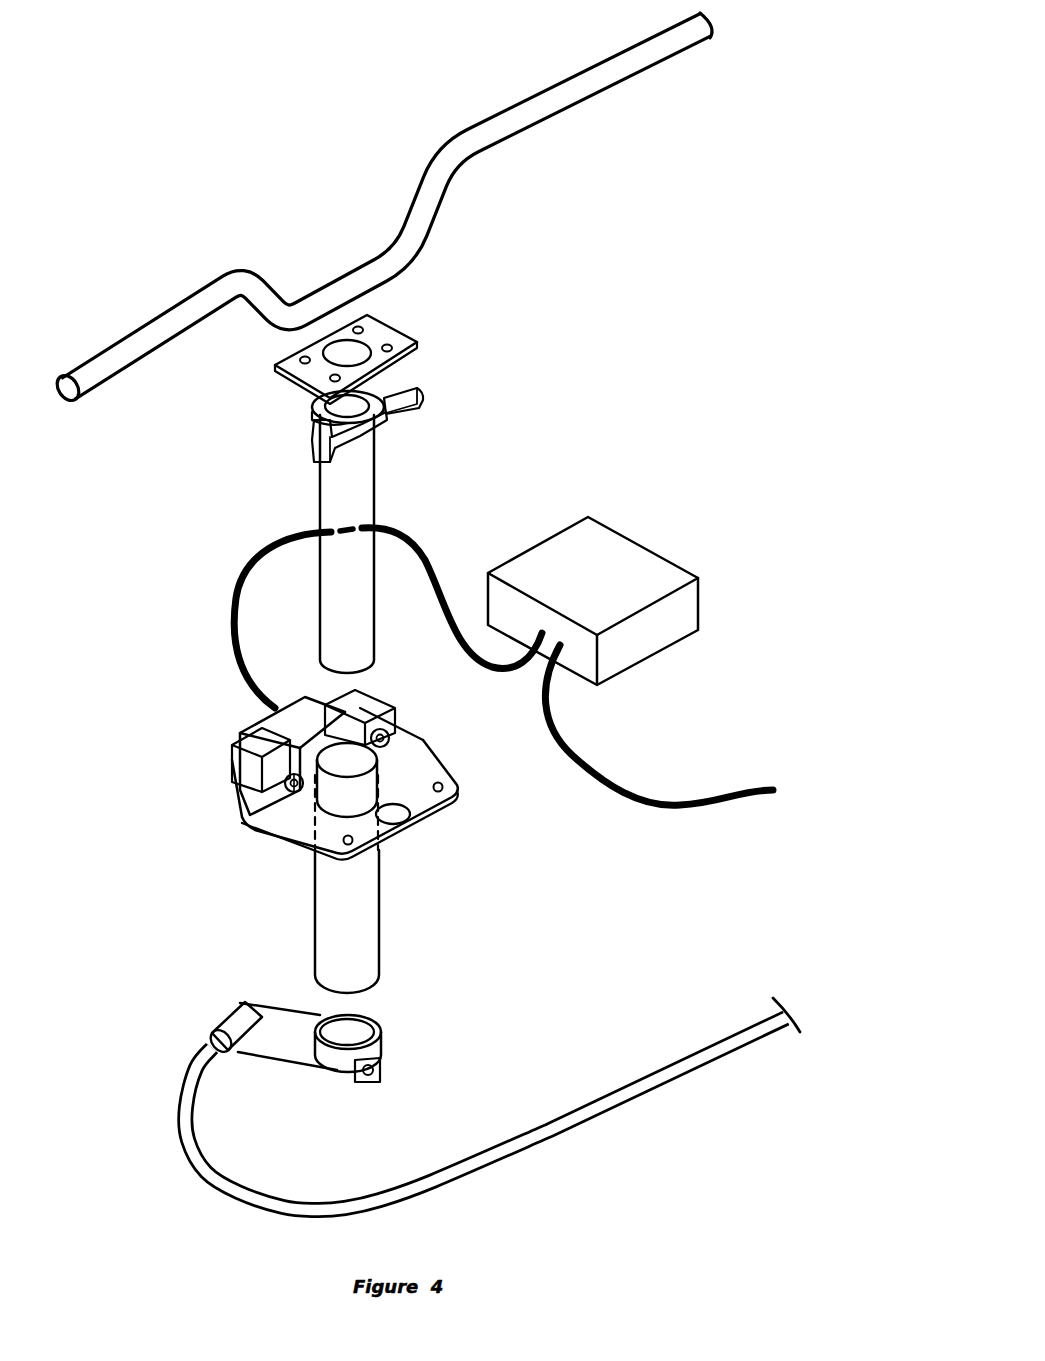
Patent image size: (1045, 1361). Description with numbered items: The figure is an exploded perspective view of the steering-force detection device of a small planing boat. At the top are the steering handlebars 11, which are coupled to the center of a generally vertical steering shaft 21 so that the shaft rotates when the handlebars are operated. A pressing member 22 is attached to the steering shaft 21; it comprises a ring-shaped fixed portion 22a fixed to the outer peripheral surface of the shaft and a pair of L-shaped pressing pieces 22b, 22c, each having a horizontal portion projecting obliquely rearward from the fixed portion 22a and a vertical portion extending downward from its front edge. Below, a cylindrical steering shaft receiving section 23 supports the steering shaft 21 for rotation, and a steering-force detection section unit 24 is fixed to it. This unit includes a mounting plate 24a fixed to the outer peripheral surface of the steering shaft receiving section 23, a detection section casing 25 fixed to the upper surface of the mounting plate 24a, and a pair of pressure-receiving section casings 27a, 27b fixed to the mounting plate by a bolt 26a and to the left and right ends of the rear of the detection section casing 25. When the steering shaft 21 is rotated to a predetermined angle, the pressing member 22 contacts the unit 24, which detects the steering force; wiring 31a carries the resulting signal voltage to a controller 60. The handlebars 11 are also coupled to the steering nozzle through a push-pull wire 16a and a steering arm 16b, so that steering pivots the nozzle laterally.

The steering handlebars 11 is at (498, 110).
The steering shaft 21 is at (374, 493).
The pressing member 22 is at (358, 391).
The ring-shaped fixed portion 22a is at (312, 413).
The L-shaped pressing piece 22b is at (312, 458).
The L-shaped pressing piece 22c is at (421, 393).
The steering shaft receiving section 23 is at (380, 882).
The steering-force detection section unit 24 is at (347, 787).
The mounting plate 24a is at (426, 812).
The detection section casing 25 is at (270, 723).
The bolt 26a is at (232, 770).
The pressure-receiving section casing 27a is at (278, 823).
The pressure-receiving section casing 27b is at (420, 733).
The wiring 31a is at (420, 547).
The controller 60 is at (617, 545).
The push-pull wire 16a is at (433, 1178).
The steering arm 16b is at (288, 1047).